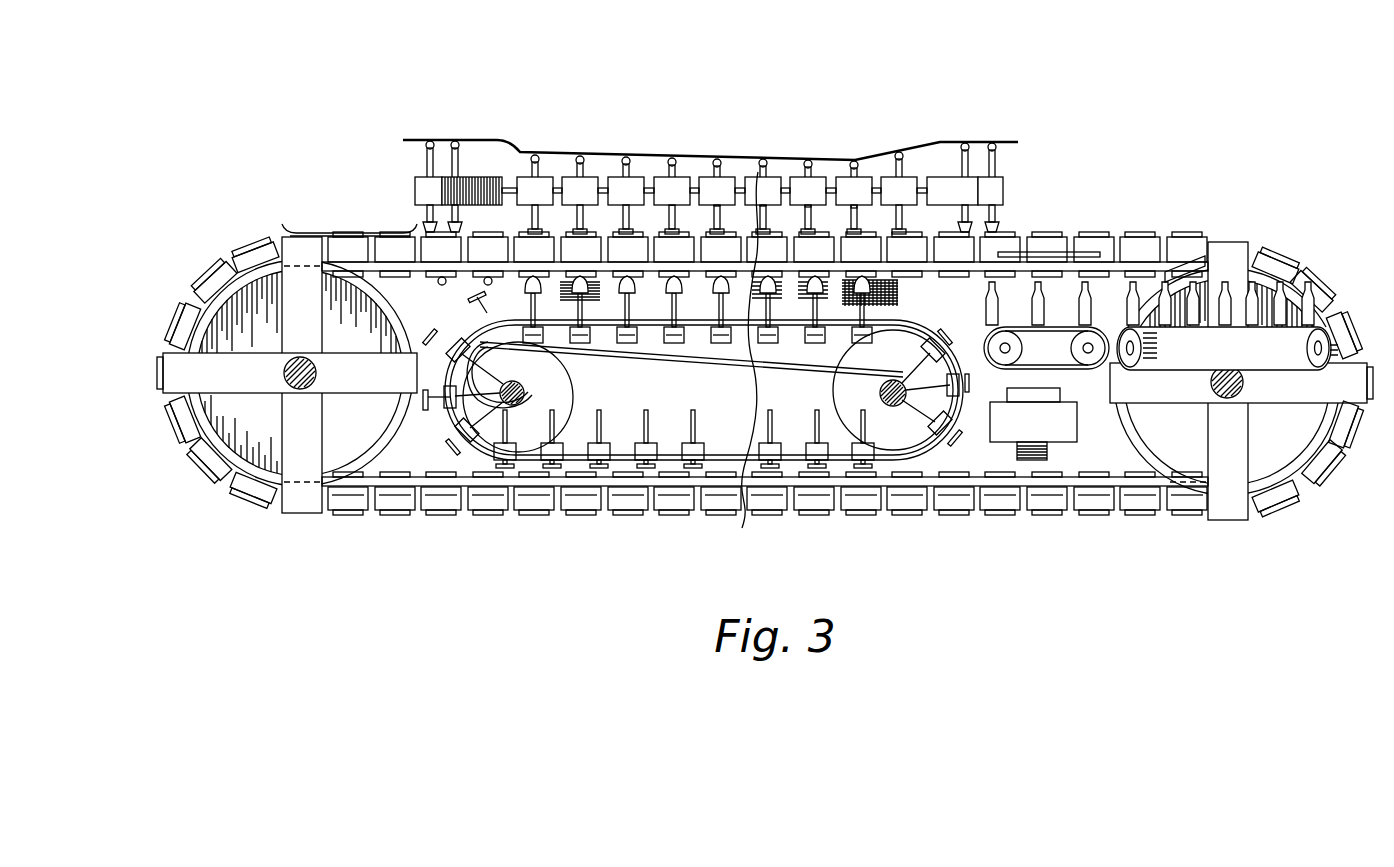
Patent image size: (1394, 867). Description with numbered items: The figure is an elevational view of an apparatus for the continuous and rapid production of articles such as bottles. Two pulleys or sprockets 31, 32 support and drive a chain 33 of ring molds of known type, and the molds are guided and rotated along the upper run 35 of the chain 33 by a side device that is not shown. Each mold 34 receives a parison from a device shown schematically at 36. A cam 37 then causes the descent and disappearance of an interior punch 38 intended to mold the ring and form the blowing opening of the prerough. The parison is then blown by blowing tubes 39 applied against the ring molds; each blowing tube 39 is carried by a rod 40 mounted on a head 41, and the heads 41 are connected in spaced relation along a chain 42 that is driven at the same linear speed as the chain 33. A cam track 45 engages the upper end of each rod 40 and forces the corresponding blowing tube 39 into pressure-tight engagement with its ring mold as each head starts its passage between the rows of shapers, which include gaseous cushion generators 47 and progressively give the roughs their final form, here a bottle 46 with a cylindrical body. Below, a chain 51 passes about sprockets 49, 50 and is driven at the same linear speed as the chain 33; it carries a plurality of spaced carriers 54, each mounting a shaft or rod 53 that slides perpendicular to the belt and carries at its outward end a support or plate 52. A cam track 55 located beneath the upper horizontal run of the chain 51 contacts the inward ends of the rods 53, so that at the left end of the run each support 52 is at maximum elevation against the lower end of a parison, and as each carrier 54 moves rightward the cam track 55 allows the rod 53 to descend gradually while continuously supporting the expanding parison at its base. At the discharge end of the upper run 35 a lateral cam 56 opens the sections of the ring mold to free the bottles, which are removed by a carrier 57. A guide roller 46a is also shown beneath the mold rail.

The pulley or sprocket 31 is at (255, 440).
The pulley or sprocket 32 is at (1290, 435).
The chain of ring molds 33 is at (200, 330).
The mold 34 is at (180, 437).
The upper run 35 is at (1125, 330).
The parison supply device 36 is at (1028, 425).
The cam 37 is at (318, 226).
The interior punch 38 is at (204, 268).
The blowing tube 39 is at (428, 226).
The rod 40 is at (428, 163).
The head 41 is at (420, 186).
The chain 42 is at (537, 186).
The cam track 45 is at (428, 138).
The bottle 46 is at (1093, 266).
The guide roller 46a is at (438, 285).
The gaseous cushion generator 47 is at (567, 295).
The sprocket 49 is at (480, 445).
The sprocket 50 is at (922, 440).
The chain 51 is at (997, 298).
The support or plate 52 is at (420, 402).
The shaft or rod 53 is at (585, 305).
The carrier 54 is at (582, 332).
The cam track 55 is at (700, 358).
The lateral cam 56 is at (1060, 325).
The carrier 57 is at (1170, 275).